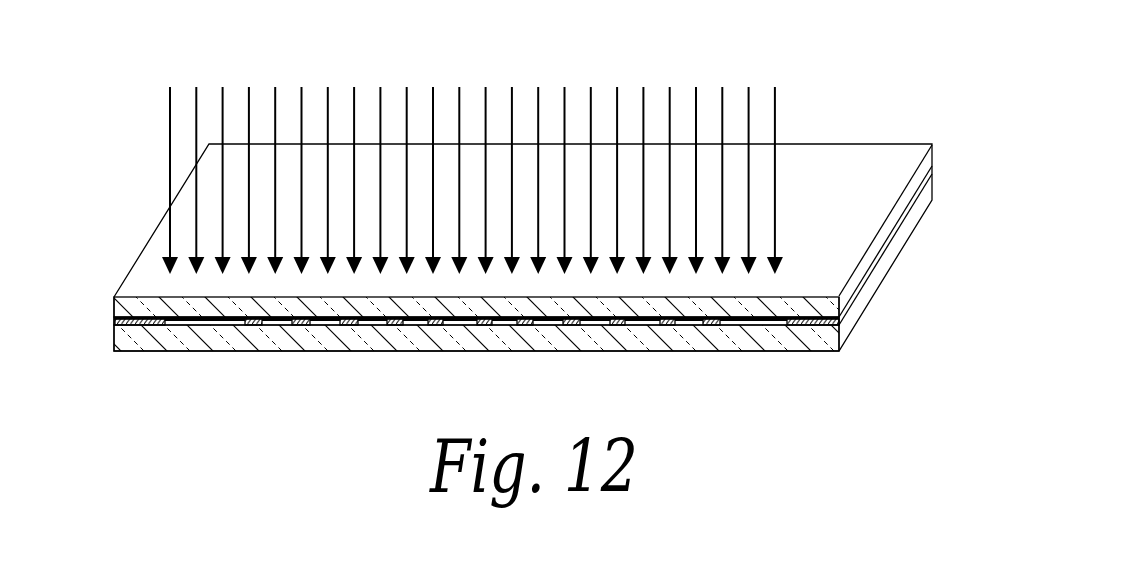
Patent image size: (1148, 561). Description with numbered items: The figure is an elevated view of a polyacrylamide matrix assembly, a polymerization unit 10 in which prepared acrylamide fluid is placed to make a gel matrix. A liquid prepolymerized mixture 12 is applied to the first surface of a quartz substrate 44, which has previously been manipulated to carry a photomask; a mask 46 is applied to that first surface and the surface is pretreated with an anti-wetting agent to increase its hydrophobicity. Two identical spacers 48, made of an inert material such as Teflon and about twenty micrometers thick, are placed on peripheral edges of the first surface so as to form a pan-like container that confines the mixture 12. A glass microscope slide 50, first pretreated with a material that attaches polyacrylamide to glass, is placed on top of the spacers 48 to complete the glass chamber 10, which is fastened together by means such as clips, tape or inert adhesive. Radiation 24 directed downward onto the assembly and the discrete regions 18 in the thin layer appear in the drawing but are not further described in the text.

The polymerization unit 10 is at (136, 124).
The liquid prepolymerized mixture 12 is at (476, 379).
The electrode segment 18 is at (627, 323).
The incident radiation 24 is at (776, 205).
The quartz substrate 44 is at (141, 303).
The mask 46 is at (687, 323).
The spacers 48 is at (140, 324).
The glass microscope slide 50 is at (257, 341).